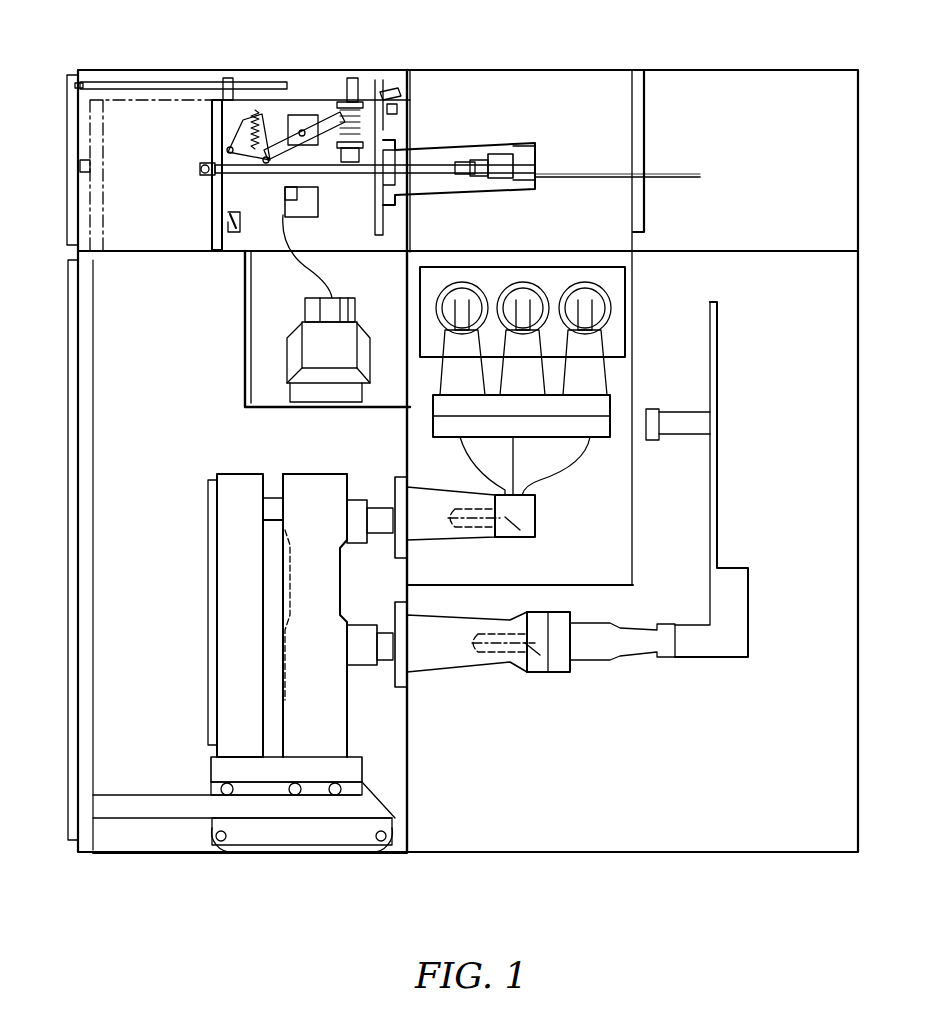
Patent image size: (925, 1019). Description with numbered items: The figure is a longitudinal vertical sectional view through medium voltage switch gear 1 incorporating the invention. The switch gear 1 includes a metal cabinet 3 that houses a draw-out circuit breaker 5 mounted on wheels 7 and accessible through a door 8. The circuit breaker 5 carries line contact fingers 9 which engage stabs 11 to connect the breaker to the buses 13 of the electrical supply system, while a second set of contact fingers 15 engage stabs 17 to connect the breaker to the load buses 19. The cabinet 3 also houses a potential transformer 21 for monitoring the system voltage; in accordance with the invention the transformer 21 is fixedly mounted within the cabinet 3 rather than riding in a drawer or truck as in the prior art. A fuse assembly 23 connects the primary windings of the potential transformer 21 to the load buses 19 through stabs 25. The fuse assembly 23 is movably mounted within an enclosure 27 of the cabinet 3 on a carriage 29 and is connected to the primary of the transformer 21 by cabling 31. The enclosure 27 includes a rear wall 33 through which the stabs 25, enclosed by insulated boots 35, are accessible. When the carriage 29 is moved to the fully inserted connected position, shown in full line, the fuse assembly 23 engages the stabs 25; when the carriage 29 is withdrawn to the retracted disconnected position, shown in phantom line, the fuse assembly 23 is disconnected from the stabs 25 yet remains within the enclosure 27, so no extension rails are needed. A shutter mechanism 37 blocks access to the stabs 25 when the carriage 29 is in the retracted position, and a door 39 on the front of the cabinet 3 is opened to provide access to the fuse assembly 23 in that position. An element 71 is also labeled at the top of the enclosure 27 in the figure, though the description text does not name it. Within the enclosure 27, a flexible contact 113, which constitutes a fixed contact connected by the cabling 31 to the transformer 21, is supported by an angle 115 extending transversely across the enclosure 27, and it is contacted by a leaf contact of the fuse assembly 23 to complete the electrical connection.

The medium voltage switch gear 1 is at (674, 40).
The metal cabinet 3 is at (496, 70).
The draw-out circuit breaker 5 is at (228, 597).
The wheels 7 is at (370, 853).
The door 8 is at (68, 411).
The line contact fingers 9 is at (470, 528).
The stabs 11 is at (527, 540).
The buses 13 is at (465, 300).
The second set of contact fingers 15 is at (498, 660).
The stabs 17 is at (540, 672).
The load buses 19 is at (717, 515).
The potential transformer 21 is at (300, 312).
The fuse assembly 23 is at (414, 152).
The stabs 25 is at (480, 160).
The enclosure 27 is at (175, 108).
The carriage 29 is at (216, 138).
The cabling 31 is at (334, 276).
The rear wall 33 is at (410, 80).
The insulated boots 35 is at (448, 192).
The shutter mechanism 37 is at (392, 90).
The door 39 is at (67, 110).
The operating shaft 71 is at (124, 80).
The flexible contact 113 is at (312, 193).
The angle 115 is at (270, 190).